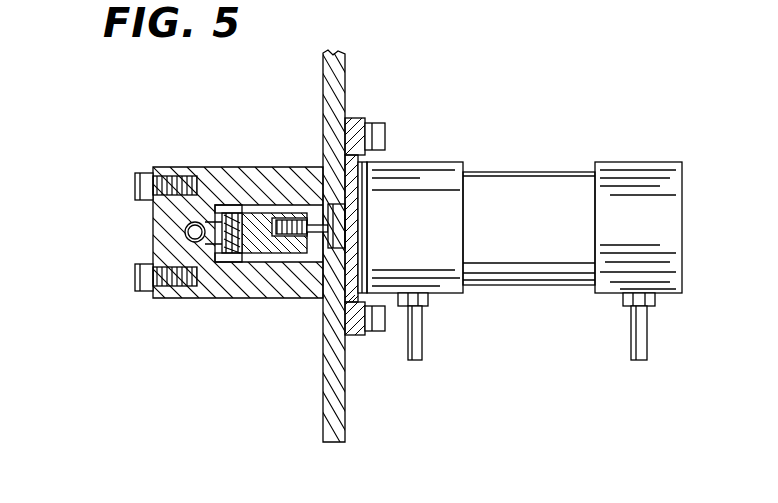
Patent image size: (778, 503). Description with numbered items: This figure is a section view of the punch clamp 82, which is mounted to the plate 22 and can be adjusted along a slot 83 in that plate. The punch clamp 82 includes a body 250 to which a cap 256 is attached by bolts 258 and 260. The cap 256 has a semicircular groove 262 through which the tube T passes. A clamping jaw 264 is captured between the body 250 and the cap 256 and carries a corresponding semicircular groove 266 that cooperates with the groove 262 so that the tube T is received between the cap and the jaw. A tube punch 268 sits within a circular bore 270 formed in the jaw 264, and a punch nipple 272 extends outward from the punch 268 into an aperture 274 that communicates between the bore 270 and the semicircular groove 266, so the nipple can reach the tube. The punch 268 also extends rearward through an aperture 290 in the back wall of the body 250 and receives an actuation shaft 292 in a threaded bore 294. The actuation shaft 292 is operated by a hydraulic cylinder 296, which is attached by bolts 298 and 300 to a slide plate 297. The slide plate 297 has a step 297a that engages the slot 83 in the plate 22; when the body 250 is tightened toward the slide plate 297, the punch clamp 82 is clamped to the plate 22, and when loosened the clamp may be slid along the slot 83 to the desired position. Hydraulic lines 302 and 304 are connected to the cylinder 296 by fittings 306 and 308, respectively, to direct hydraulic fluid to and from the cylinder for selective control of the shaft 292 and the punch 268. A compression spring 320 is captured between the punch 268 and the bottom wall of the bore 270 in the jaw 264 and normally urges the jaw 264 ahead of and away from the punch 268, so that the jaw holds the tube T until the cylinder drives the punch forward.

The punch clamp 82 is at (66, 112).
The plate 22 is at (345, 75).
The slot 83 is at (310, 185).
The body 250 is at (200, 167).
The cap 256 is at (183, 167).
The bolt 258 is at (128, 173).
The bolt 260 is at (135, 278).
The semicircular groove 262 is at (186, 236).
The tube T is at (190, 227).
The clamping jaw 264 is at (245, 262).
The semicircular groove 266 is at (193, 300).
The tube punch 268 is at (231, 258).
The circular bore 270 is at (235, 167).
The punch nipple 272 is at (250, 203).
The aperture 274 is at (222, 167).
The aperture 290 is at (331, 220).
The actuation shaft 292 is at (329, 226).
The threaded bore 294 is at (292, 262).
The hydraulic cylinder 296 is at (530, 172).
The slide plate 297 is at (351, 262).
The step 297a is at (359, 266).
The bolt 298 is at (378, 340).
The bolt 300 is at (386, 135).
The hydraulic line 302 is at (422, 335).
The hydraulic line 304 is at (630, 335).
The fitting 306 is at (428, 305).
The fitting 308 is at (628, 305).
The compression spring 320 is at (222, 262).